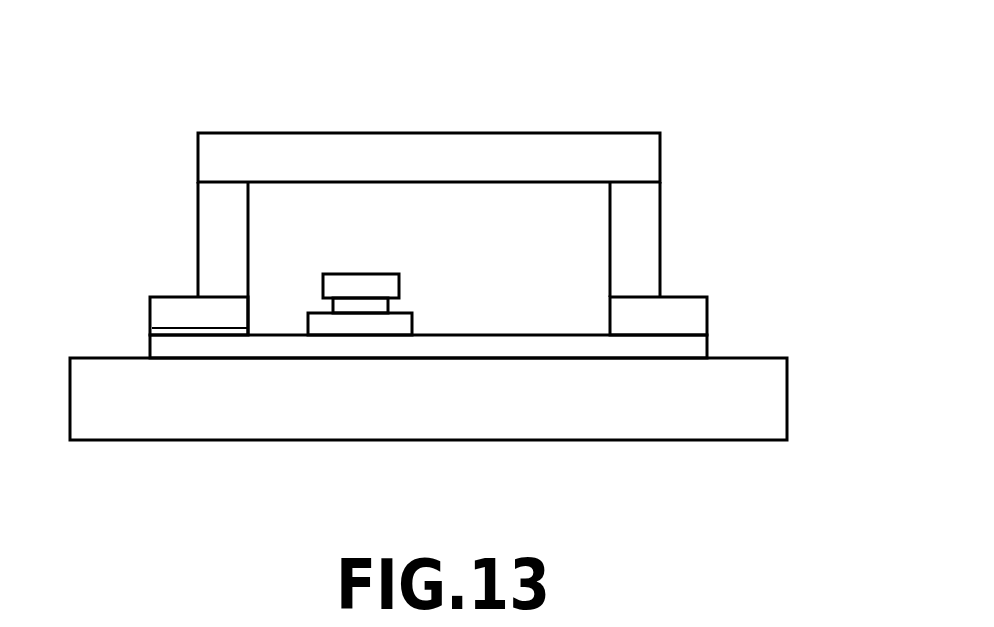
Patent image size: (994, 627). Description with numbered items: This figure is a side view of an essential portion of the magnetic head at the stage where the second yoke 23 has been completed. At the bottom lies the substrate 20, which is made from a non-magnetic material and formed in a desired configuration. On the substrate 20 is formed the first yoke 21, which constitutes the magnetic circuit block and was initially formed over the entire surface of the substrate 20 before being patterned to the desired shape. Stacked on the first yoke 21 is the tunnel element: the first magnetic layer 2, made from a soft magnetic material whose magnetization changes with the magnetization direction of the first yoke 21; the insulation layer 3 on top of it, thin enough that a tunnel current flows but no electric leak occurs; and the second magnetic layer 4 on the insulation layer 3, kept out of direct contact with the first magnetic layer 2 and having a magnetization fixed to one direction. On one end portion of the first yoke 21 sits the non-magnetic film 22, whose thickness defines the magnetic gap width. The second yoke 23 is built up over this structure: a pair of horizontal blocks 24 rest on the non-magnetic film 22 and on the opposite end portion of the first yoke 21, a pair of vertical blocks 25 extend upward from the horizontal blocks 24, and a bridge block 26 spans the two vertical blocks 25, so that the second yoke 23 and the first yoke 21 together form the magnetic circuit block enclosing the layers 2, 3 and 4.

The first magnetic layer 2 is at (398, 327).
The insulation layer 3 is at (397, 305).
The second magnetic layer 4 is at (360, 287).
The substrate 20 is at (765, 395).
The first yoke 21 is at (690, 347).
The non-magnetic film 22 is at (152, 332).
The second yoke 23 is at (488, 185).
The horizontal blocks 24 is at (688, 311).
The vertical blocks 25 is at (645, 227).
The bridge block 26 is at (492, 153).